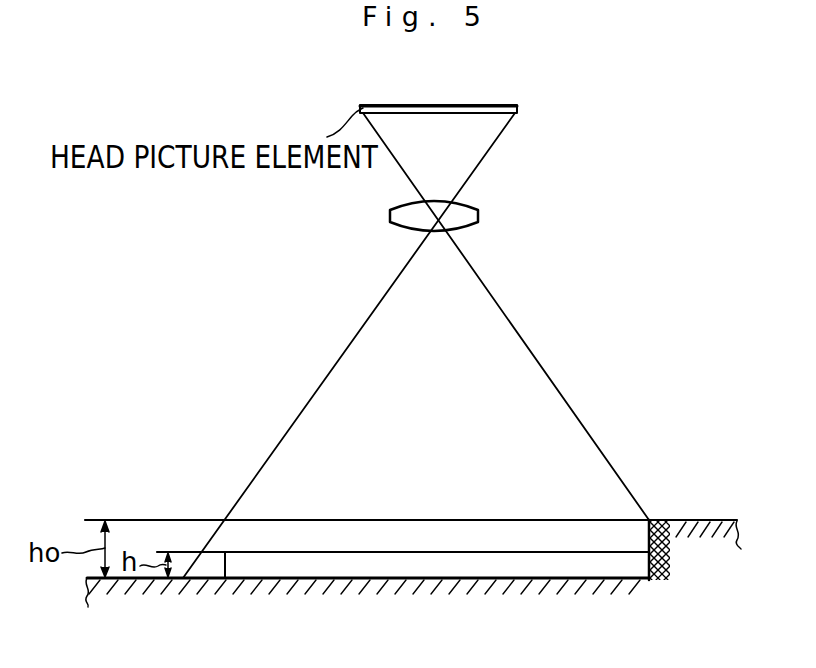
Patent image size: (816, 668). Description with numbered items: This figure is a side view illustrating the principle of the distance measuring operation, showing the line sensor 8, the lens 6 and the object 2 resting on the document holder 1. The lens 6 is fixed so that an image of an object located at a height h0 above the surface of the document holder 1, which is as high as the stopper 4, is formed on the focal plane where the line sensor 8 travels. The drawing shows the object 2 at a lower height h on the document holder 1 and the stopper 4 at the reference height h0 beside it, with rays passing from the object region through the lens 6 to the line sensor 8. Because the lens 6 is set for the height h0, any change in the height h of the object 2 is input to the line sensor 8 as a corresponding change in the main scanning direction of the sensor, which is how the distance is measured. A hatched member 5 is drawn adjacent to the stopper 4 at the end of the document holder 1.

The document holder 1 is at (452, 581).
The object 2 is at (338, 552).
The stopper 4 is at (700, 520).
The spacer block 5 is at (671, 549).
The lens 6 is at (478, 216).
The line sensor 8 is at (493, 110).